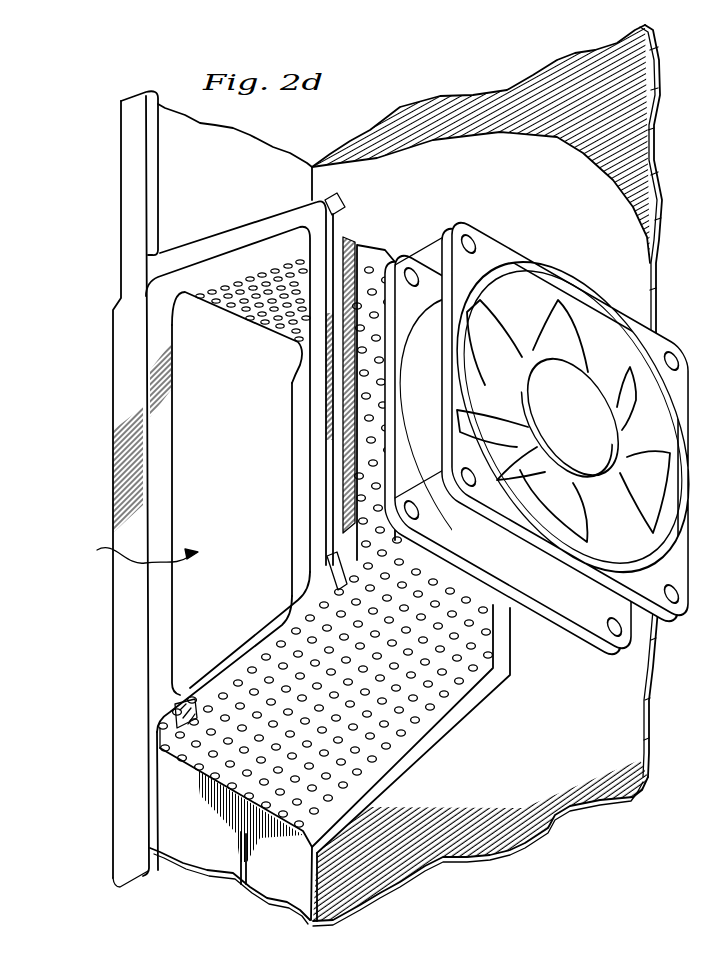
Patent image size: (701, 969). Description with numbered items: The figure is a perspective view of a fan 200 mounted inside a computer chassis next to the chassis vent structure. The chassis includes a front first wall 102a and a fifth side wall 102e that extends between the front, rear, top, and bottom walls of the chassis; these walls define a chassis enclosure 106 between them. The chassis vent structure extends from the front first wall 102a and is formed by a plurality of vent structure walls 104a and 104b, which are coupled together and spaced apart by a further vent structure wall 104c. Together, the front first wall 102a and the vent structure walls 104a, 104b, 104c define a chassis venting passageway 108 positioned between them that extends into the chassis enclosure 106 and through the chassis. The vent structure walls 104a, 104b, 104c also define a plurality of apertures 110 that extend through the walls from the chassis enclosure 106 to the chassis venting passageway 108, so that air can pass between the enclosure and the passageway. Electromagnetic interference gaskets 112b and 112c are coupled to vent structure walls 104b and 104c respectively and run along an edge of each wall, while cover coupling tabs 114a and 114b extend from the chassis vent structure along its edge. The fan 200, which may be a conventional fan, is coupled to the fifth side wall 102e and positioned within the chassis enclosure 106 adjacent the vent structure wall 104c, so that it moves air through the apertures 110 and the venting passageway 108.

The front first wall 102a is at (113, 366).
The fifth side wall 102e is at (397, 165).
The vent structure wall 104a is at (198, 249).
The vent structure wall 104b is at (250, 640).
The vent structure wall 104c is at (318, 477).
The chassis enclosure 106 is at (282, 190).
The chassis venting passageway 108 is at (126, 557).
The apertures 110 is at (416, 722).
The electromagnetic interference gasket 112b is at (220, 689).
The electromagnetic interference gasket 112c is at (343, 430).
The cover coupling tab 114a is at (345, 207).
The cover coupling tab 114b is at (326, 560).
The fan 200 is at (553, 274).